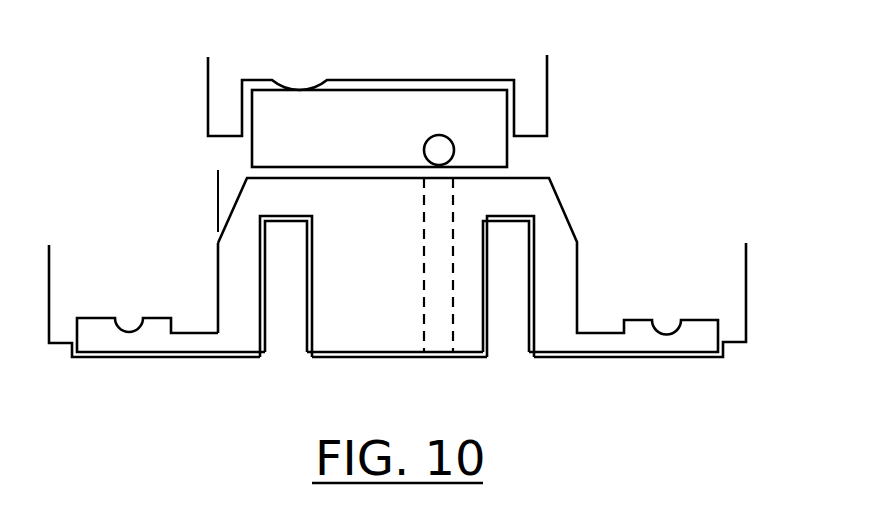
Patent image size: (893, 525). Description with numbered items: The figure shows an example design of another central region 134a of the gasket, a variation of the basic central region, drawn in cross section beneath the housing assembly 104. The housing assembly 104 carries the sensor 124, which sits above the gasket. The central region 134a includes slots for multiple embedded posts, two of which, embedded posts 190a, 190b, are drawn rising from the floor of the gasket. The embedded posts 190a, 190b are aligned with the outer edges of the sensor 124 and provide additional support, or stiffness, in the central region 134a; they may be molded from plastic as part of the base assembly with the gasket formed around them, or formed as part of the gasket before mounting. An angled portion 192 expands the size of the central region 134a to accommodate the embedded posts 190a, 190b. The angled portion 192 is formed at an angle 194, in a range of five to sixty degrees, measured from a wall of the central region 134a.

The housing assembly 104 is at (547, 96).
The sensor 124 is at (331, 140).
The angled portion 192 is at (563, 214).
The angle 194 is at (272, 205).
The central region 134a is at (218, 305).
The embedded post 190a is at (297, 355).
The embedded post 190b is at (508, 355).